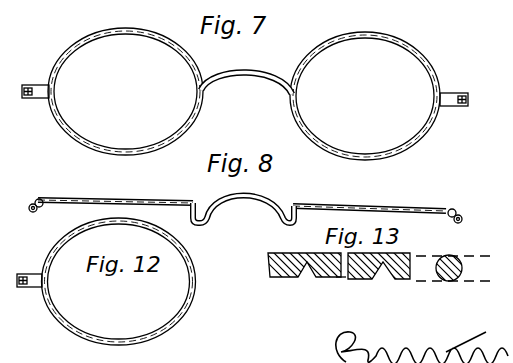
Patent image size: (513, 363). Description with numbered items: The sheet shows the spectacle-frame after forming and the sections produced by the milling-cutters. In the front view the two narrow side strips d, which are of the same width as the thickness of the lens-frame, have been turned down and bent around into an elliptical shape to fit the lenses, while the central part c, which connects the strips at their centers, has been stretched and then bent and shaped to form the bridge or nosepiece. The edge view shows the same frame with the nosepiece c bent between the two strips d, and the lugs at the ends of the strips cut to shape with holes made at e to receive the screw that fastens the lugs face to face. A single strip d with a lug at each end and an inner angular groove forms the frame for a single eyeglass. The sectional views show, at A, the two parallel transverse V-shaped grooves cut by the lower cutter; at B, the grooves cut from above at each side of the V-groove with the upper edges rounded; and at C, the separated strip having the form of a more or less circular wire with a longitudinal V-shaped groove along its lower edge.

In FIG. 7, the side strip d is at (136, 29).
In FIG. 8, the side strip d is at (111, 199).
In FIG. 12, the side strip d is at (193, 244).
In FIG. 7, the bridge or nose piece c is at (251, 72).
In FIG. 8, the bridge or nose piece c is at (256, 194).
In FIG. 8, the screw hole e is at (464, 202).
In FIG. 13, the lower V-shaped grooves cut A is at (305, 279).
In FIG. 13, the upper lateral grooves cut B is at (370, 273).
In FIG. 13, the finished grooved wire section C is at (373, 273).